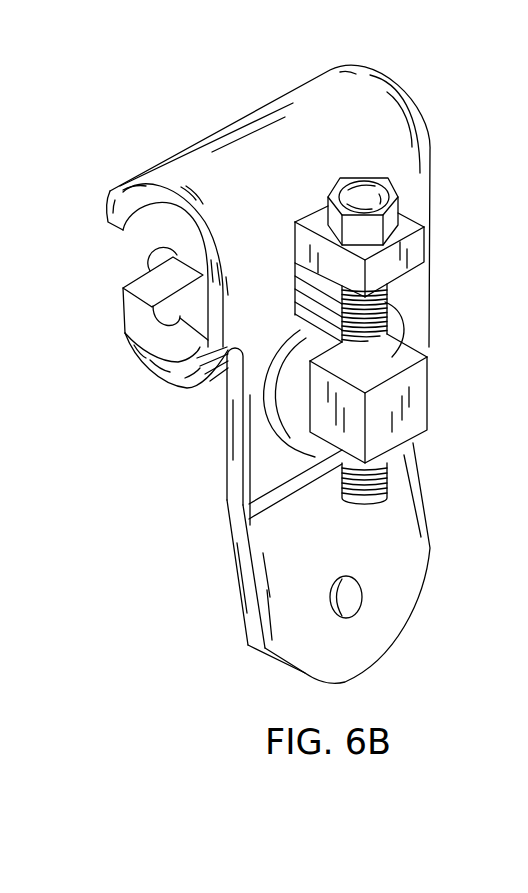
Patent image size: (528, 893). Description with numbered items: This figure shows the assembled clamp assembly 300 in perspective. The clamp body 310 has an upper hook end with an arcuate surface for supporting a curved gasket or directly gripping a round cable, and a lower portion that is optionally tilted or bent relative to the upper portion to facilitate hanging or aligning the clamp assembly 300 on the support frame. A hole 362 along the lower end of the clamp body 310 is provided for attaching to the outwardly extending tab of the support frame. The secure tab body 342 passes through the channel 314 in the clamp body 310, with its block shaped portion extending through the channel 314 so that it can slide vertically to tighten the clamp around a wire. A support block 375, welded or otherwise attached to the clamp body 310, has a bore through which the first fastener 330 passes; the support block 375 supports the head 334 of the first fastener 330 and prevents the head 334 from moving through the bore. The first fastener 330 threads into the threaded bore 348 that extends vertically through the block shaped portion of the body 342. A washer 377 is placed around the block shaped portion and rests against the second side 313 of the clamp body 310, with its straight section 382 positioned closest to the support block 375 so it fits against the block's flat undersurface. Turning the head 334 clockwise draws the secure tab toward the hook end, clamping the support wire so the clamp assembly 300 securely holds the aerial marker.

The clamp assembly 300 is at (193, 104).
The clamp body 310 is at (413, 559).
The second side 313 is at (250, 480).
The channel 314 is at (303, 272).
The first fastener 330 is at (388, 323).
The head 334 is at (388, 195).
The body 342 is at (417, 407).
The threaded bore 348 is at (393, 358).
The hole 362 is at (357, 600).
The support block 375 is at (417, 240).
The washer 377 is at (298, 438).
The straight section 382 is at (300, 333).